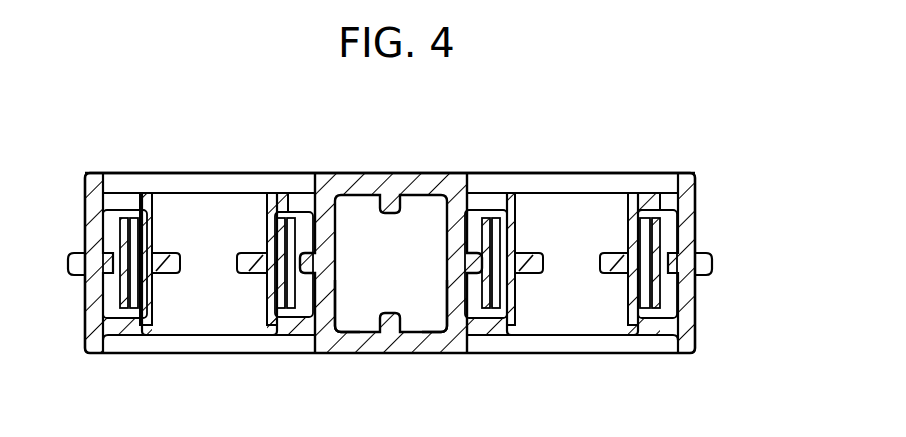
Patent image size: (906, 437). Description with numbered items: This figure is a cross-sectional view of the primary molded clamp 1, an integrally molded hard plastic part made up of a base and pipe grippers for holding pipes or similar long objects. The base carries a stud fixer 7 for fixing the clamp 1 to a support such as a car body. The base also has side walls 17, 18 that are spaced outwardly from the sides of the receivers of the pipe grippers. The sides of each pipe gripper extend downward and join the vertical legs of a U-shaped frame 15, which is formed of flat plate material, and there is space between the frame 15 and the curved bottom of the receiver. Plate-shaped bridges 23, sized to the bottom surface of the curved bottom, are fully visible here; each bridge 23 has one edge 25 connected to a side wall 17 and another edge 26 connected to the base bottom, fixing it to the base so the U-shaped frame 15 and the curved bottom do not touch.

The primary molded clamp 1 is at (743, 194).
The stud fixer 7 is at (394, 171).
The U-shaped frame 15 is at (136, 227).
The side wall 17 is at (693, 216).
The side wall 18 is at (340, 300).
The bridge 23 is at (225, 200).
The edge 25 is at (135, 328).
The edge 26 is at (291, 225).